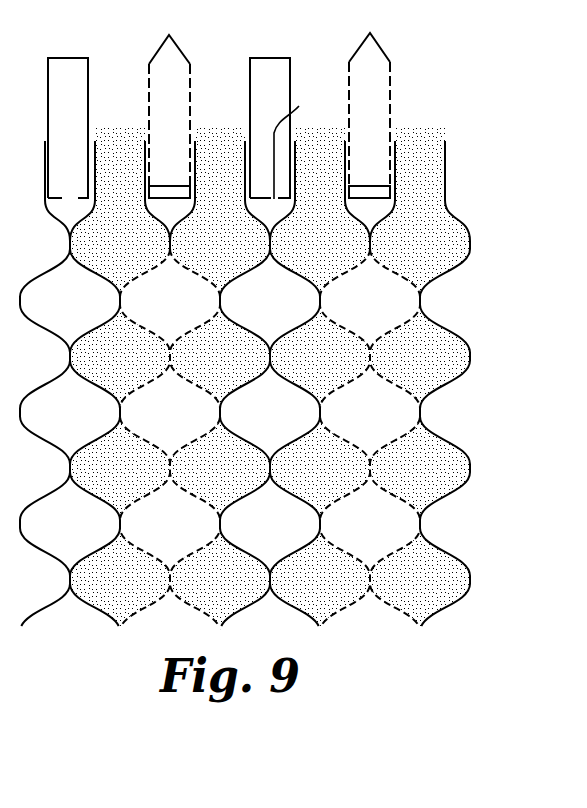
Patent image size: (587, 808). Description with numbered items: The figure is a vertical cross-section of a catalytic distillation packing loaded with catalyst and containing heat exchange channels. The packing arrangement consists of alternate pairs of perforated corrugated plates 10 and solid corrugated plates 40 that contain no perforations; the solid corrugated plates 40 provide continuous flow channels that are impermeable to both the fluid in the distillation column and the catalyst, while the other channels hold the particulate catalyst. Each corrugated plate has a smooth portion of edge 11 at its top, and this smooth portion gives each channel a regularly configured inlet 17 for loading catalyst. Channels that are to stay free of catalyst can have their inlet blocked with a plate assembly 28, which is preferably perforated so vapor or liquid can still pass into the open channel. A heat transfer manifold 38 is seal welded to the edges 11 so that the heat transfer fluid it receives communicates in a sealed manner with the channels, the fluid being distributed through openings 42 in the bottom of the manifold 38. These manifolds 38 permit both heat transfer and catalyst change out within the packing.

The corrugated plates 10 is at (412, 319).
The edge 11 is at (251, 157).
The inlet 17 is at (327, 158).
The plate assembly 28 is at (371, 34).
The heat transfer manifold 38 is at (275, 58).
The solid corrugated plates 40 is at (306, 322).
The openings 42 is at (303, 137).